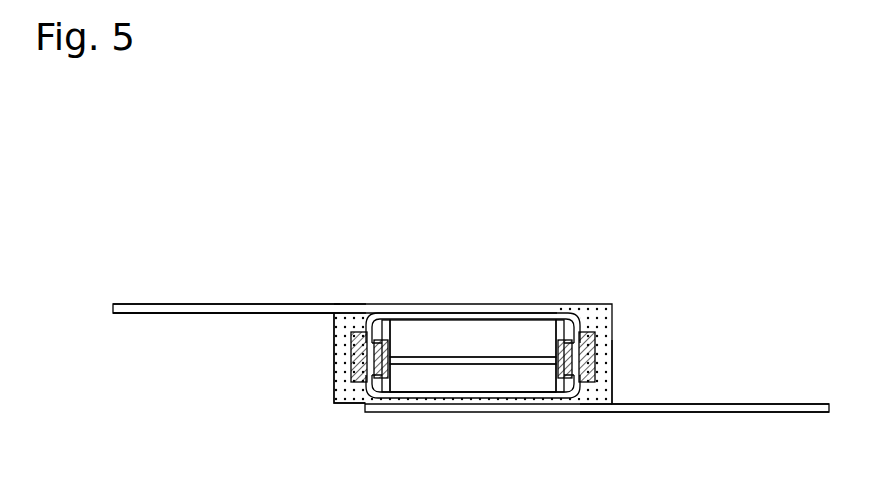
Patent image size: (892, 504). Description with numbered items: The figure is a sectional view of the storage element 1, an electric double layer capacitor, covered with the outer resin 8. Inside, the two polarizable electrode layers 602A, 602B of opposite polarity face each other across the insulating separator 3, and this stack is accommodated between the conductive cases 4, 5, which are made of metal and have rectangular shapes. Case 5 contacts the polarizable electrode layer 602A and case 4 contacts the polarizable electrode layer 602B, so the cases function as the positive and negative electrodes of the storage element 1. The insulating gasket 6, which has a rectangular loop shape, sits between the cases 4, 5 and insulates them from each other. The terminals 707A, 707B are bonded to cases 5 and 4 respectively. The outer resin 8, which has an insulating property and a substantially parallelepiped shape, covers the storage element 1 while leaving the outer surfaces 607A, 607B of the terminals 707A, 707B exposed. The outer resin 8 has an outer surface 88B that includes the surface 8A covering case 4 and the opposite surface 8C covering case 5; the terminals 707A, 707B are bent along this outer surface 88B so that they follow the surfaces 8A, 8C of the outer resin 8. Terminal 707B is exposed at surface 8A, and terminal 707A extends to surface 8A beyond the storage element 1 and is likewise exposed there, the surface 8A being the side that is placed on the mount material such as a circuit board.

The storage element 1 is at (521, 316).
The separator 3 is at (498, 357).
The case 4 is at (528, 393).
The case 5 is at (558, 309).
The gasket 6 is at (592, 354).
The outer resin 8 is at (347, 371).
The surface 8A is at (386, 406).
The surface 8C is at (550, 308).
The outer surface 88B is at (613, 387).
The polarizable electrode layer 602A is at (434, 326).
The polarizable electrode layer 602B is at (438, 382).
The outer surface 607A is at (342, 303).
The outer surface 607B is at (572, 413).
The terminal 707A is at (232, 306).
The terminal 707B is at (670, 413).